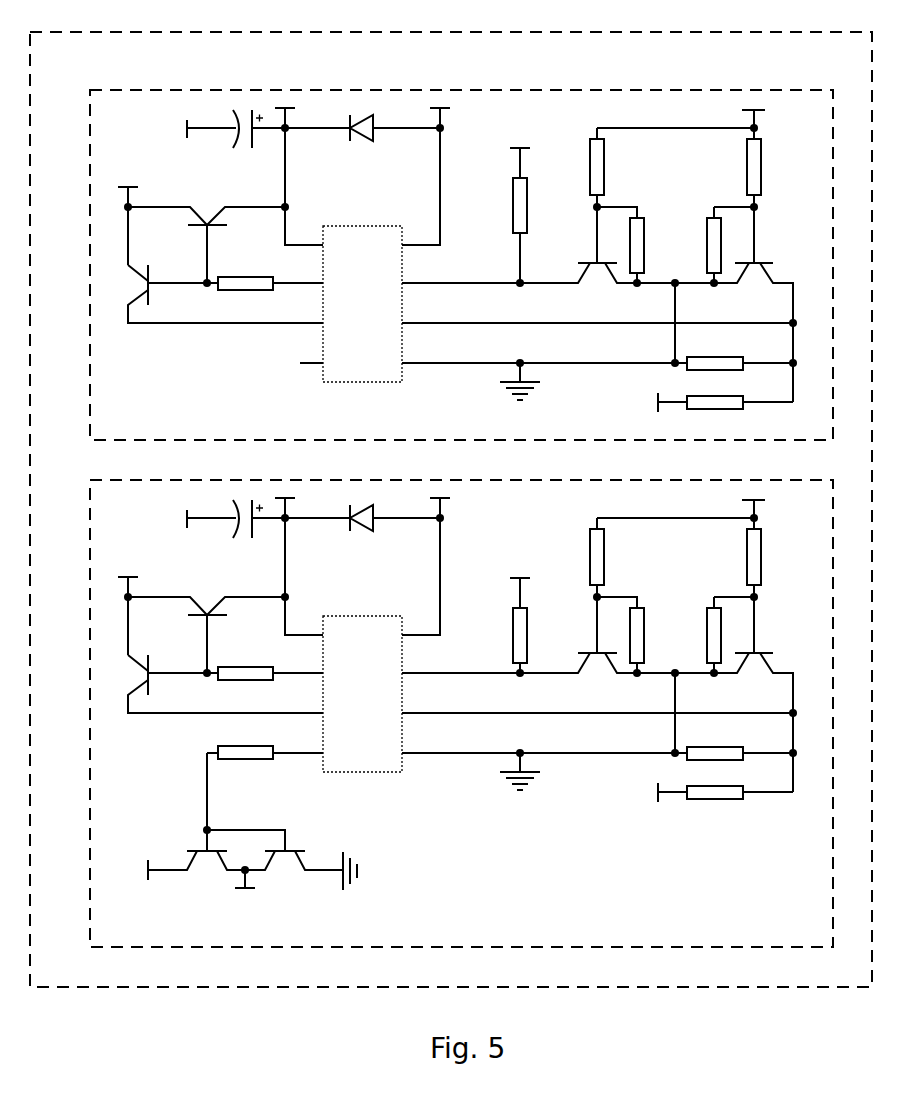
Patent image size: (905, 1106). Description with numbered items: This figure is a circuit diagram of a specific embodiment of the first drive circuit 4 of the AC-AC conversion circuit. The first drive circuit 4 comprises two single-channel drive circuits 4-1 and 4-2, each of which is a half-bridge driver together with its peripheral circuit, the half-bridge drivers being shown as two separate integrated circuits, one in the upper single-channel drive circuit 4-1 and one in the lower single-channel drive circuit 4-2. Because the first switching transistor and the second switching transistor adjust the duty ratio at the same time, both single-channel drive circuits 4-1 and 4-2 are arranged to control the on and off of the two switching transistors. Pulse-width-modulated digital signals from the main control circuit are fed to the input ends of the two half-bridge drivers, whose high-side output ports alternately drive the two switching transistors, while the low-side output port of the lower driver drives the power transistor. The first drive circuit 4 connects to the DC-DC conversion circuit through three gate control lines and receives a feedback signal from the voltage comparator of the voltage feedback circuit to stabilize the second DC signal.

The first drive circuit 4 is at (451, 509).
The single-channel drive circuit 4-1 is at (461, 265).
The single-channel drive circuit 4-2 is at (461, 713).